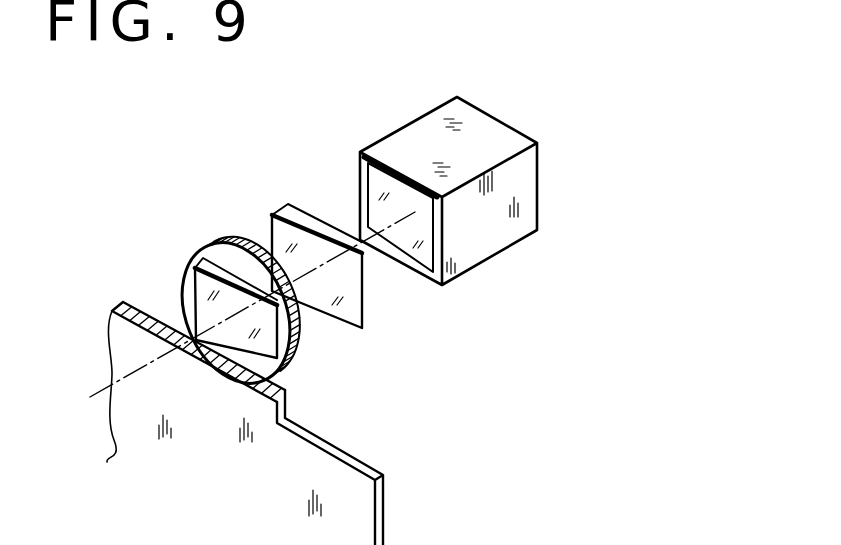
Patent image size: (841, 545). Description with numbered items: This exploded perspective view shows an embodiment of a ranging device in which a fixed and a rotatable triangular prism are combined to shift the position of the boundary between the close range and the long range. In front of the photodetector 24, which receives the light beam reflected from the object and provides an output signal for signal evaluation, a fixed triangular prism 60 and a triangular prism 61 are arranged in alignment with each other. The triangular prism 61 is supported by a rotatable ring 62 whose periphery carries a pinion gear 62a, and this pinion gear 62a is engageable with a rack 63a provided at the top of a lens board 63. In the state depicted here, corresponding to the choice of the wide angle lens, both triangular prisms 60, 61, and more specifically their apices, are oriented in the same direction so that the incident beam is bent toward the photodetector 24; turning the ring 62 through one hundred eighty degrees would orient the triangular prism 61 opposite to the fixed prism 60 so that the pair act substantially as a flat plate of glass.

The photodetector 24 is at (435, 136).
The fixed triangular prism 60 is at (307, 226).
The triangular prism 61 is at (193, 292).
The rotatable ring 62 is at (262, 278).
The pinion gear 62a is at (228, 244).
The lens board 63 is at (313, 475).
The rack 63a is at (133, 309).